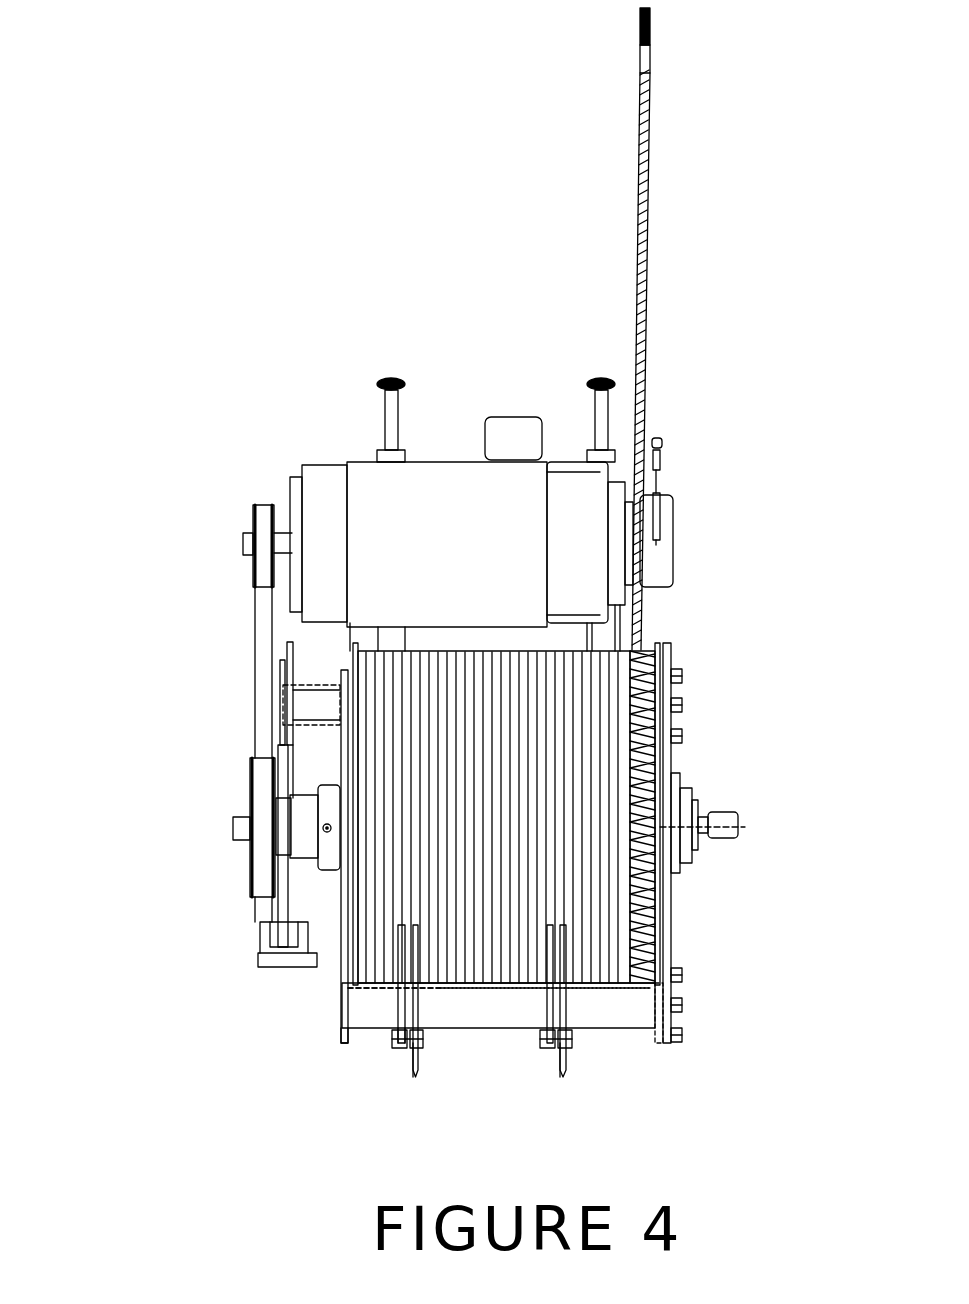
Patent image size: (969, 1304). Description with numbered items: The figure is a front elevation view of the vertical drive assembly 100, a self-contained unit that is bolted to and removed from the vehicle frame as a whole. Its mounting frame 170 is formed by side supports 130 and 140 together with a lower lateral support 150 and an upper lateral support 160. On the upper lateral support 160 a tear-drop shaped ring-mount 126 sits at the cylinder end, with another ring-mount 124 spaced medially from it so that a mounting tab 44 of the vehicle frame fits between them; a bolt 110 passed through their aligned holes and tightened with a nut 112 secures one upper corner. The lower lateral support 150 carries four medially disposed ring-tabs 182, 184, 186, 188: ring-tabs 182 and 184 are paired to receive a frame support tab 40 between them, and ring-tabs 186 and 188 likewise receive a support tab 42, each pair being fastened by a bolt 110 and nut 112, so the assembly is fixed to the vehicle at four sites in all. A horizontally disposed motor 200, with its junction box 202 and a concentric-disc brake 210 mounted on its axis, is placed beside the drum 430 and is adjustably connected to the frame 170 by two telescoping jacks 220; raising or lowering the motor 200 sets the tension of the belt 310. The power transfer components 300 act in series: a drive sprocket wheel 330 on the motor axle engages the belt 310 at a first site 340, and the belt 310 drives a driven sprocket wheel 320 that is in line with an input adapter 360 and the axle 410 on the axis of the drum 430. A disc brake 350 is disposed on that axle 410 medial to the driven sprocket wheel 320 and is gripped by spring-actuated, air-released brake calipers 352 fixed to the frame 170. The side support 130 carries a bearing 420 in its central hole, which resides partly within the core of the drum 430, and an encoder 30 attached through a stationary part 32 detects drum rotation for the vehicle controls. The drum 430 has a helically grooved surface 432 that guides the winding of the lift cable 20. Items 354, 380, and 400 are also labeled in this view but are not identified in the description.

The vertical drive assembly 100 is at (778, 298).
The lift cable 20 is at (646, 310).
The encoder 30 is at (738, 825).
The stationary part 32 is at (720, 850).
The support tab 40 is at (413, 1075).
The support tab 42 is at (567, 1075).
The mounting tab 44 is at (283, 688).
The bolt 110 is at (683, 676).
The nut 112 is at (417, 1050).
The ring-mount 124 is at (340, 772).
The ring-mount 126 is at (283, 692).
The side support 130 is at (672, 945).
The side support 140 is at (342, 1020).
The lower lateral support 150 is at (455, 1030).
The upper lateral support 160 is at (290, 660).
The vertical drive assembly mounting frame 170 is at (325, 678).
The ring-tab 182 is at (392, 1040).
The ring-tab 184 is at (425, 1000).
The ring-tab 186 is at (545, 1015).
The ring-tab 188 is at (578, 1000).
The motor 200 is at (362, 460).
The junction box 202 is at (476, 440).
The brake 210 is at (673, 522).
The motor adjustment jack 220 is at (595, 410).
The power transfer equipment 300 is at (193, 597).
The belt 310 is at (255, 900).
The driven sprocket wheel 320 is at (250, 868).
The drive sprocket wheel 330 is at (254, 512).
The first site 340 is at (243, 545).
The disc brake 350 is at (265, 930).
The brake calipers 352 is at (275, 950).
The bracket base plate 354 is at (262, 965).
The input adapter 360 is at (290, 805).
The brake assembly 380 is at (122, 752).
The cable wrap flange 400 is at (662, 658).
The axle 410 is at (233, 828).
The bearing 420 is at (692, 790).
The drum 430 is at (340, 922).
The helically grooved surface 432 is at (500, 898).